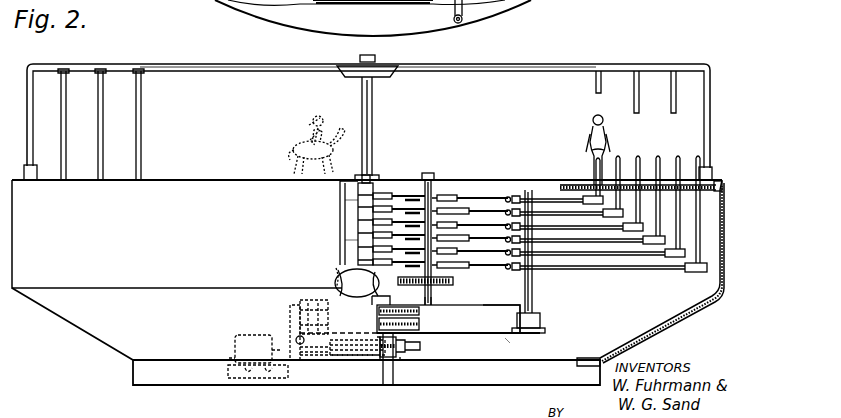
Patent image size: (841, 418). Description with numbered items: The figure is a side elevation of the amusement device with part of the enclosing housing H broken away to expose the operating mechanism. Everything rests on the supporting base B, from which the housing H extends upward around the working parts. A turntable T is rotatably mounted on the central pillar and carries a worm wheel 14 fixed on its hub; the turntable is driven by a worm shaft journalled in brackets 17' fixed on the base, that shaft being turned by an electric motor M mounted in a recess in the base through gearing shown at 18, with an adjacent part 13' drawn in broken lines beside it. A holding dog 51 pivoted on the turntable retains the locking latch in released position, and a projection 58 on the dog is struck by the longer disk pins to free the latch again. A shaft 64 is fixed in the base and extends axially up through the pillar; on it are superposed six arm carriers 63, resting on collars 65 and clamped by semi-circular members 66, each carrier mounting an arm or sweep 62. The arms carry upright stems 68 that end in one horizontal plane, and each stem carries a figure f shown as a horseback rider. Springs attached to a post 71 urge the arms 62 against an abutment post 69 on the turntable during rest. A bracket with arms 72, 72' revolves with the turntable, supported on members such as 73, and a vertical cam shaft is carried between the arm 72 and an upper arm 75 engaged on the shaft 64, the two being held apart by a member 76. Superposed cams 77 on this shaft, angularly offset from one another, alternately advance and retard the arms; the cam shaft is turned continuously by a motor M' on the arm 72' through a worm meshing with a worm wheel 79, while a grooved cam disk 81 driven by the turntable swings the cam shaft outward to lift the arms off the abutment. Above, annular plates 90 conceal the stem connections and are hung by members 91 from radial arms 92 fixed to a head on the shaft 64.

The suspending members 91 is at (30, 105).
The radial arms 92 is at (225, 72).
The shaft 64 is at (373, 140).
The figures f is at (278, 140).
The housing H is at (712, 318).
The annular plates 90 is at (582, 184).
The arm stems 68 is at (620, 160).
The arms or sweeps 62 is at (595, 270).
The abutment post 69 is at (533, 300).
The cams 77 is at (470, 200).
The connecting member 76 is at (448, 190).
The arm 75 is at (418, 193).
The arm carriers 63 is at (380, 190).
The semi-circular members 66 is at (358, 205).
The collars 65 is at (358, 238).
The electric motor M' is at (362, 287).
The worm wheel 79 is at (455, 282).
The bracket arm 72' is at (319, 278).
The bracket arm 72 is at (447, 295).
The post 71 is at (517, 310).
The supporting member 73 is at (472, 322).
The cam disk 81 is at (419, 320).
The turntable T is at (490, 345).
The worm wheel 14 is at (393, 360).
The brackets 17' is at (422, 348).
The electric motor M is at (255, 343).
The gears 18 is at (290, 332).
The dog projection 58 is at (306, 302).
The rod 13' is at (357, 332).
The holding dog 51 is at (333, 347).
The supporting base B is at (465, 378).